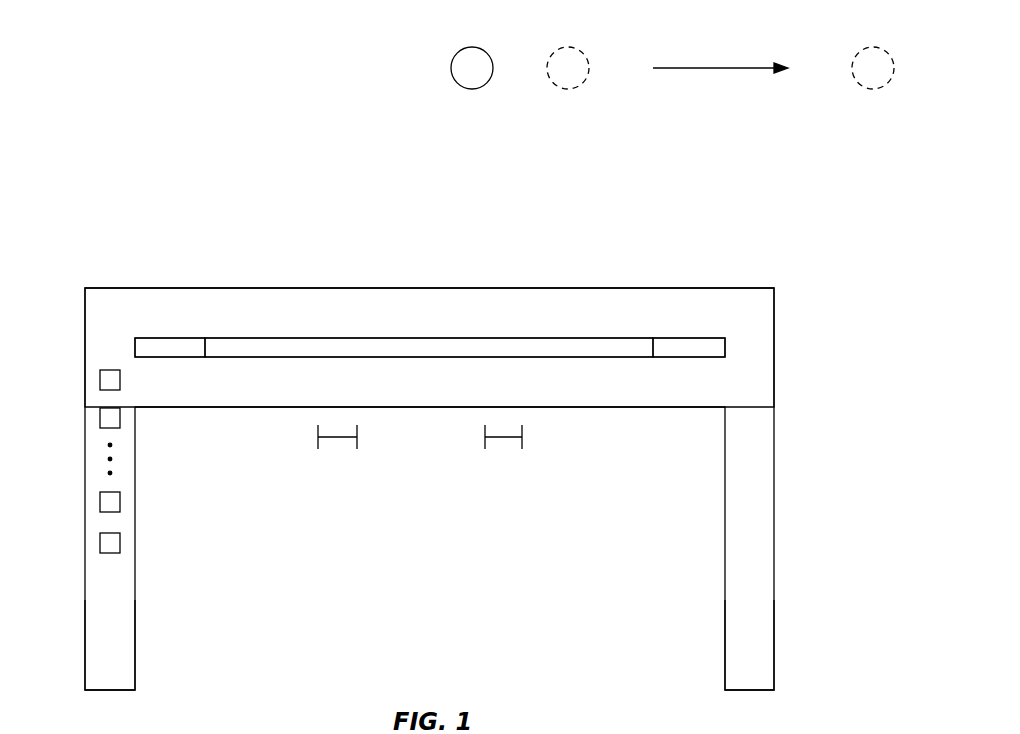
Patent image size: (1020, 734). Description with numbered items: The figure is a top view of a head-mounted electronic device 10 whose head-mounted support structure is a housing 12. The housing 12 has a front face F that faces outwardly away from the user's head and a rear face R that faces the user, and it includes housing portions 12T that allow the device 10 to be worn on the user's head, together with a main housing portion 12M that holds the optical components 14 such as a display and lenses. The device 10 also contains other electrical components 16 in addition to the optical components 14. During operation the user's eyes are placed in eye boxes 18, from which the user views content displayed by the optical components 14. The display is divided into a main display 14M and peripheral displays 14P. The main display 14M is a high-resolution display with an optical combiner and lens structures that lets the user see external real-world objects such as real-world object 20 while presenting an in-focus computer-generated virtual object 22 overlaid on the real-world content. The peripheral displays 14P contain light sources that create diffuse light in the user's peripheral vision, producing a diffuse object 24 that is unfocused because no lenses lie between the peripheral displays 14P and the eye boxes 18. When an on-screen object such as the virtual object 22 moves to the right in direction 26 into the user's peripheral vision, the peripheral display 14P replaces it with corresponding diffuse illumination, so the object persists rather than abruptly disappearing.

The electronic device 10 is at (446, 432).
The housing 12 is at (776, 475).
The housing portion 12T is at (100, 638).
The main housing portion 12M is at (58, 288).
The optical components 14 is at (563, 316).
The peripheral display 14P is at (172, 346).
The main display 14M is at (279, 346).
The electrical components 16 is at (100, 380).
The eye boxes 18 is at (503, 440).
The real-world object 20 is at (471, 89).
The virtual object 22 is at (566, 89).
The diffuse object 24 is at (871, 89).
The direction 26 is at (713, 68).
The rear face R is at (205, 437).
The front face F is at (136, 261).